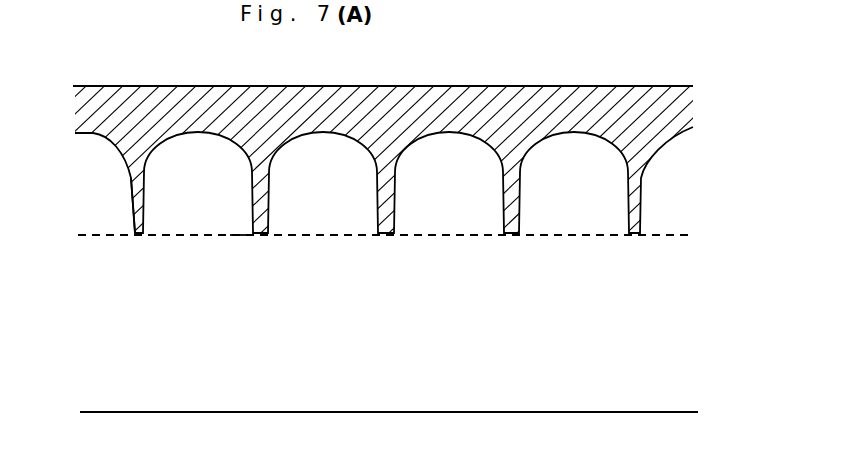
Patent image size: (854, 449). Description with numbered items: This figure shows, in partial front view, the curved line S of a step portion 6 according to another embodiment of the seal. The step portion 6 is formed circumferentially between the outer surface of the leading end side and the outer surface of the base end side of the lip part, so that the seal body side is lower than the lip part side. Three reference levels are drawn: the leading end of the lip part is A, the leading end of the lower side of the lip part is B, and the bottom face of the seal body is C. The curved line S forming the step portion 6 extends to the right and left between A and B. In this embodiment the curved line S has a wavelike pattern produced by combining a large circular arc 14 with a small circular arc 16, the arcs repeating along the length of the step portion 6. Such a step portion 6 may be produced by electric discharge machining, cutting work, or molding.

The large circular arc 14 is at (187, 134).
The small circular arc 16 is at (268, 235).
The step portion 6 is at (243, 237).
The leading end of the lip part A is at (370, 88).
The curved line S is at (132, 195).
The leading end of a lower side of the lip part B is at (373, 239).
The bottom face of the seal body C is at (375, 415).